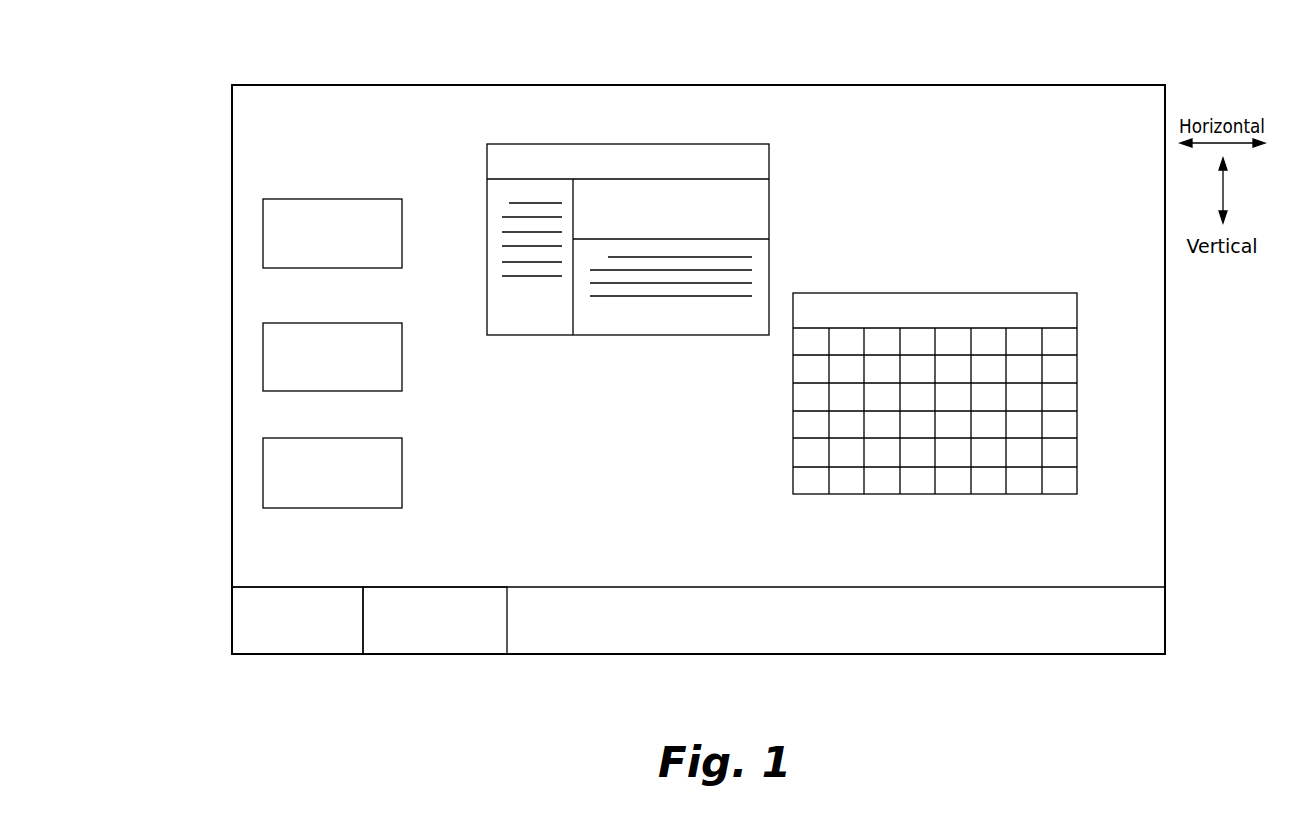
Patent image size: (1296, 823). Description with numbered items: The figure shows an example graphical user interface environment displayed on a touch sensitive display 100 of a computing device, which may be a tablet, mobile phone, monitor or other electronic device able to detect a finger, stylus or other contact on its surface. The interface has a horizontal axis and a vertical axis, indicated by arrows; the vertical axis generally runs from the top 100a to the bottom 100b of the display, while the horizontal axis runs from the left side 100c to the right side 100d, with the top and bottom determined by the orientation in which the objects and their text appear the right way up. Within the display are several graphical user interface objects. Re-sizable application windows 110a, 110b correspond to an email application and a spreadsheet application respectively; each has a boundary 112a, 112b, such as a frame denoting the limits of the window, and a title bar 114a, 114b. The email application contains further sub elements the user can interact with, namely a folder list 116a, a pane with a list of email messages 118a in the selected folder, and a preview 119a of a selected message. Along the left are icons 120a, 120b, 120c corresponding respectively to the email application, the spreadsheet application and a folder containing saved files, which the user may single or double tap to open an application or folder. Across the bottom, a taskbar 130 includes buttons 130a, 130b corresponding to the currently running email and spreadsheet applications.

The touch sensitive display 100 is at (345, 52).
The top of the display 100a is at (852, 85).
The bottom of the display 100b is at (807, 656).
The left side of the display 100c is at (232, 380).
The right side of the display 100d is at (1166, 378).
The application window 110a is at (666, 217).
The application window 110b is at (974, 373).
The boundary 112a is at (770, 193).
The boundary 112b is at (1078, 344).
The title bar 114a is at (747, 172).
The title bar 114b is at (1070, 322).
The folder list 116a is at (555, 316).
The list of email messages 118a is at (655, 220).
The preview 119a is at (650, 327).
The icon 120a is at (328, 198).
The icon 120b is at (327, 322).
The icon 120c is at (328, 437).
The taskbar 130 is at (698, 614).
The button 130a is at (299, 636).
The button 130b is at (432, 636).